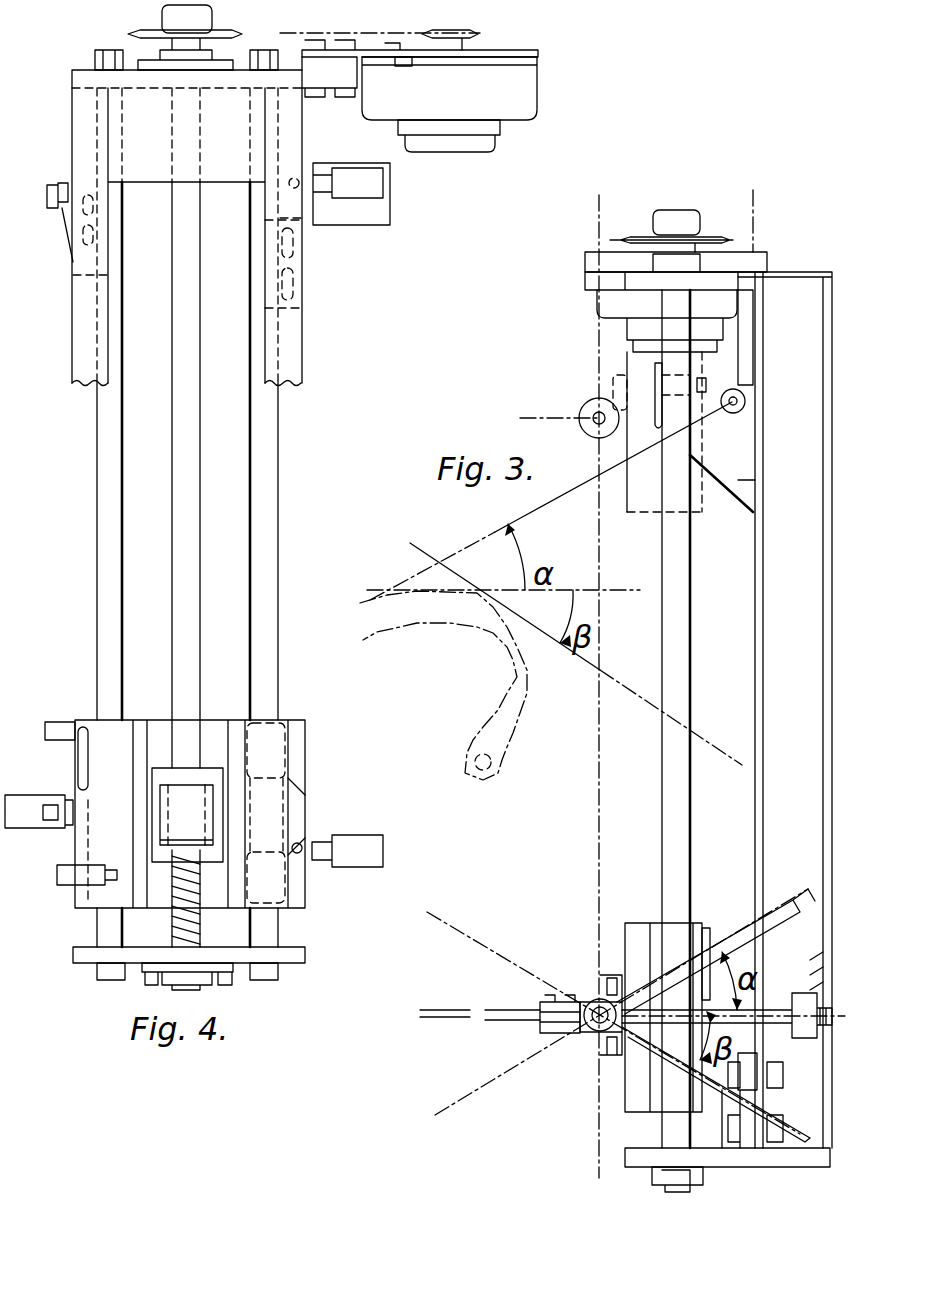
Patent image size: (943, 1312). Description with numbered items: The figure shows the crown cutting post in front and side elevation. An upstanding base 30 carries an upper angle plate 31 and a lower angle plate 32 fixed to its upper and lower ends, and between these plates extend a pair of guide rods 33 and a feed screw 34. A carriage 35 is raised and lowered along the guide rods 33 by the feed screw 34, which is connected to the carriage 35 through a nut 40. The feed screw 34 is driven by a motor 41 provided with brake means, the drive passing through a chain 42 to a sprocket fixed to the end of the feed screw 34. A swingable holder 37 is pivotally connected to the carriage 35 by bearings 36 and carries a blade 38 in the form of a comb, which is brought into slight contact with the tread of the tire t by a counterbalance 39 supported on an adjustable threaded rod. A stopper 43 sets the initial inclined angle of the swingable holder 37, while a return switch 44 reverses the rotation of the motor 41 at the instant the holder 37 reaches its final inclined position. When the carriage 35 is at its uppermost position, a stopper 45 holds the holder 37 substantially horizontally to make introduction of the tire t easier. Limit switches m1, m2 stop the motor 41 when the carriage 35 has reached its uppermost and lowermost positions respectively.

In FIG. 4, the upstanding base 30 is at (102, 357).
In FIG. 3, the upstanding base 30 is at (817, 630).
In FIG. 4, the angle plate 31 is at (148, 170).
In FIG. 3, the angle plate 31 is at (592, 280).
In FIG. 4, the angle plate 32 is at (83, 950).
In FIG. 3, the angle plate 32 is at (635, 1160).
In FIG. 4, the guide rods 33 is at (265, 620).
In FIG. 3, the guide rods 33 is at (665, 748).
In FIG. 4, the feed screw 34 is at (192, 465).
In FIG. 4, the carriage 35 is at (212, 721).
In FIG. 3, the carriage 35 is at (625, 500).
In FIG. 3, the bearings 36 is at (597, 417).
In FIG. 4, the swingable holder 37 is at (25, 808).
In FIG. 3, the swingable holder 37 is at (590, 1040).
In FIG. 3, the blade 38 is at (452, 1010).
In FIG. 3, the counterbalance 39 is at (800, 998).
In FIG. 4, the nut 40 is at (192, 790).
In FIG. 4, the motor 41 is at (465, 105).
In FIG. 4, the chain 42 is at (352, 14).
In FIG. 3, the chain 42 is at (632, 240).
In FIG. 4, the stopper 43 is at (47, 728).
In FIG. 3, the stopper 43 is at (705, 922).
In FIG. 4, the return switch 44 is at (68, 882).
In FIG. 3, the return switch 44 is at (716, 1087).
In FIG. 4, the stopper 45 is at (52, 213).
In FIG. 3, the stopper 45 is at (728, 414).
In FIG. 4, the limit switch m1 is at (362, 190).
In FIG. 4, the limit switch m2 is at (355, 815).
In FIG. 3, the tire t is at (527, 700).